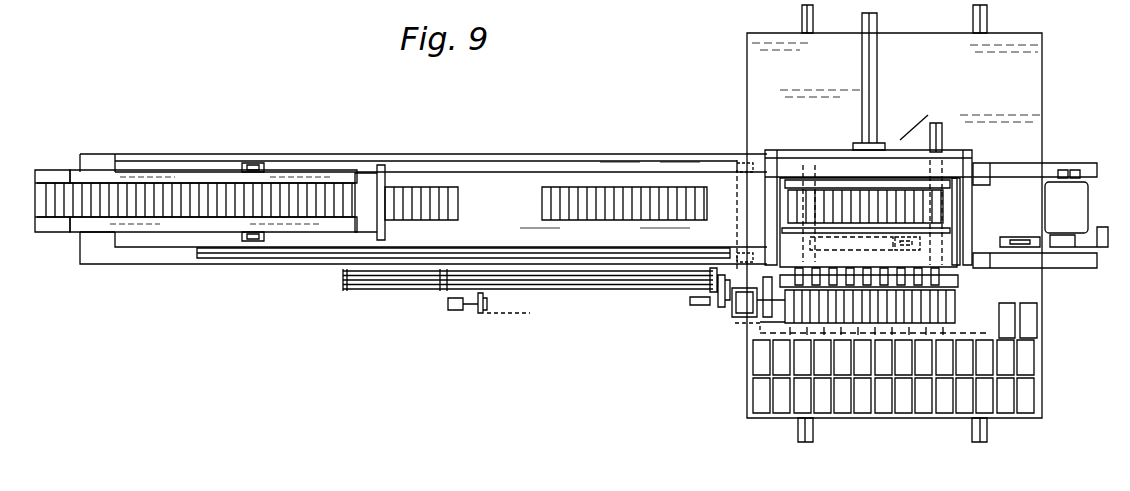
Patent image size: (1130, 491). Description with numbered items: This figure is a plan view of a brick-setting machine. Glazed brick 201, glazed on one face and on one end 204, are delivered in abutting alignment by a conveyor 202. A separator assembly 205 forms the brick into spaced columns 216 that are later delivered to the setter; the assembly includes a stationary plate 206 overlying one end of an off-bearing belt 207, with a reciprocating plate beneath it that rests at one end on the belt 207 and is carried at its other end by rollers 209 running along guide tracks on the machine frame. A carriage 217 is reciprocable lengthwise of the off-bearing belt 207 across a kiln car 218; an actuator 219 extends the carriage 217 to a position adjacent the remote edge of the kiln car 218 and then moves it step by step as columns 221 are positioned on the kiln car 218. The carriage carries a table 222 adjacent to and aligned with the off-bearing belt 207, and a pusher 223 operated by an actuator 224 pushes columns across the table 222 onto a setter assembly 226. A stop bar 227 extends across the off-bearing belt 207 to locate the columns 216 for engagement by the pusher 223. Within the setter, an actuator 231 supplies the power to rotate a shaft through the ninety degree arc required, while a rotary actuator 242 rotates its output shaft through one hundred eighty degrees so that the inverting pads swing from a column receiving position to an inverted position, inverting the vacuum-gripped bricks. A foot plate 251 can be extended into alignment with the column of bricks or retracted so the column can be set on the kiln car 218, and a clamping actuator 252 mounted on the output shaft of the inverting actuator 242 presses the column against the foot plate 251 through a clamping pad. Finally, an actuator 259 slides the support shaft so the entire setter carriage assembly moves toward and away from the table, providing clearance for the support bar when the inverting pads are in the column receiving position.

The glazed brick 201 is at (306, 182).
The conveyor 202 is at (50, 233).
The end 204 is at (437, 203).
The separator assembly 205 is at (184, 240).
The stationary plate 206 is at (195, 176).
The off-bearing belt 207 is at (527, 183).
The rollers 209 is at (261, 163).
The spaced columns 216 is at (632, 190).
The carriage 217 is at (909, 138).
The kiln car 218 is at (753, 78).
The actuator 219 is at (302, 259).
The columns 221 is at (848, 412).
The table 222 is at (851, 256).
The pusher 223 is at (828, 176).
The actuator 224 is at (878, 78).
The setter assembly 226 is at (970, 287).
The stop bar 227 is at (963, 207).
The actuator 231 is at (868, 250).
The rotary actuator 242 is at (745, 318).
The foot plate 251 is at (956, 300).
The clamping actuator 252 is at (460, 313).
The actuator 259 is at (945, 142).